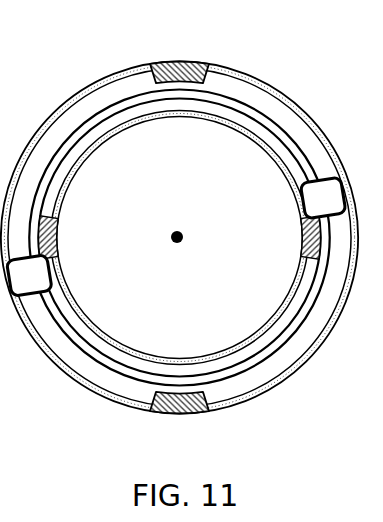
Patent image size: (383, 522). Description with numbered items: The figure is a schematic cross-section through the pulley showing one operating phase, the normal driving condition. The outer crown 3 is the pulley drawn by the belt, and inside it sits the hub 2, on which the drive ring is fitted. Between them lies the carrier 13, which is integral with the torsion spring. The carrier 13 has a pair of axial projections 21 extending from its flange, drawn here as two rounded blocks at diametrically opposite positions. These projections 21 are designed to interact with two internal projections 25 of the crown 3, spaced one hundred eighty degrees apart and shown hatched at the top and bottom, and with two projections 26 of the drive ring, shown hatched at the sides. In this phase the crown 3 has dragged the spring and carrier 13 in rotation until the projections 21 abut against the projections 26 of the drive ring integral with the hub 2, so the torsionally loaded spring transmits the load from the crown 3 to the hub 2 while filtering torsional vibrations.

The hub 2 is at (212, 124).
The crown 3 is at (289, 101).
The carrier 13 is at (282, 338).
The projections 21 is at (37, 276).
The internal projections 25 is at (180, 73).
The projections 26 is at (46, 233).